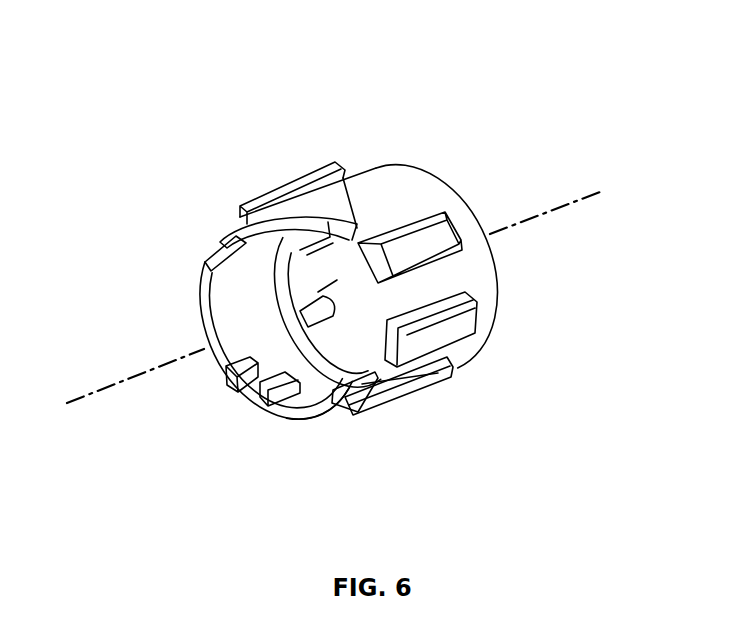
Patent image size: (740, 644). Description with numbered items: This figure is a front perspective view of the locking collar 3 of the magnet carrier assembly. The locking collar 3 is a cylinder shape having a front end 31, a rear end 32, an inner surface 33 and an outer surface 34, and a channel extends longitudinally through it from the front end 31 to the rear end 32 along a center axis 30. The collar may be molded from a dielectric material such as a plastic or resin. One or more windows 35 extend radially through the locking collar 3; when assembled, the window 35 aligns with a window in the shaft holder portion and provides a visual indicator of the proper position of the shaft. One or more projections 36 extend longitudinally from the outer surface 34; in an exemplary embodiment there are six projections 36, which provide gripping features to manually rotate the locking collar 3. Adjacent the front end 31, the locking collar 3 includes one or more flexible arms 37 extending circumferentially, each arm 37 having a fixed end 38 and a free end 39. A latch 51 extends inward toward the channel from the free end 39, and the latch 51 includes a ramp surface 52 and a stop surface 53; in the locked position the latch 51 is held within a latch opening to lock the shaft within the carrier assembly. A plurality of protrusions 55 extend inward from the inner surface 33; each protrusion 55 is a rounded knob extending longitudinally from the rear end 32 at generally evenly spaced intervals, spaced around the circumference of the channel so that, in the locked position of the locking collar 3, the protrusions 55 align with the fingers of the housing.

The locking collar 3 is at (436, 33).
The center axis 30 is at (600, 190).
The front end 31 is at (192, 302).
The rear end 32 is at (422, 168).
The inner surface 33 is at (223, 312).
The outer surface 34 is at (369, 193).
The window 35 is at (218, 236).
The projection 36 is at (422, 396).
The flexible arm 37 is at (303, 423).
The fixed end 38 is at (343, 412).
The free end 39 is at (252, 413).
The latch 51 is at (260, 413).
The ramp surface 52 is at (297, 236).
The stop surface 53 is at (256, 236).
The protrusion 55 is at (318, 296).